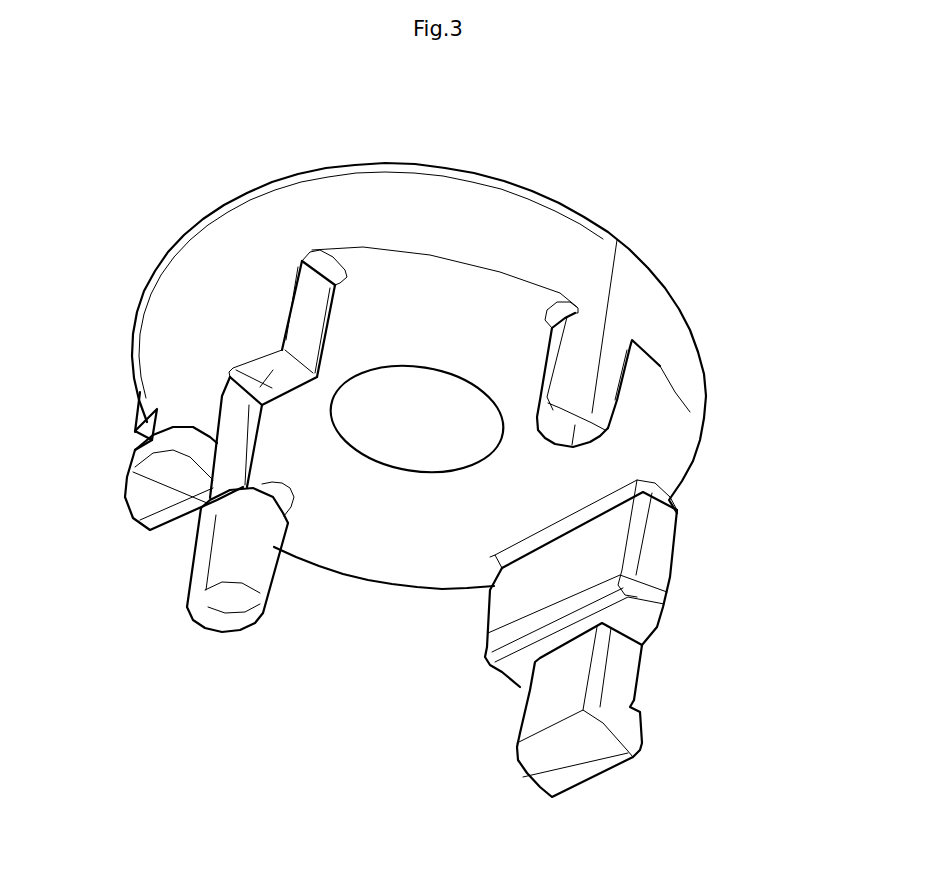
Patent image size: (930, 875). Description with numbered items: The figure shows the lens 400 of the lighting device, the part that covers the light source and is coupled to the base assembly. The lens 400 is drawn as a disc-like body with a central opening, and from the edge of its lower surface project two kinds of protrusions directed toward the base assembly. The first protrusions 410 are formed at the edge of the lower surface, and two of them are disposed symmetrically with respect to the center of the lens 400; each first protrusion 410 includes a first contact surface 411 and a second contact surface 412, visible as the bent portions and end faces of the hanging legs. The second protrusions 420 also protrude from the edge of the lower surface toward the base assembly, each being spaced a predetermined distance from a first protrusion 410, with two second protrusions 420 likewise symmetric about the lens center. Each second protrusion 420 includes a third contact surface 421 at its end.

The lens 400 is at (559, 142).
The first protrusion 410 is at (195, 294).
The first contact surface 411 is at (230, 393).
The second contact surface 412 is at (148, 428).
The second protrusion 420 is at (203, 557).
The third contact surface 421 is at (228, 630).